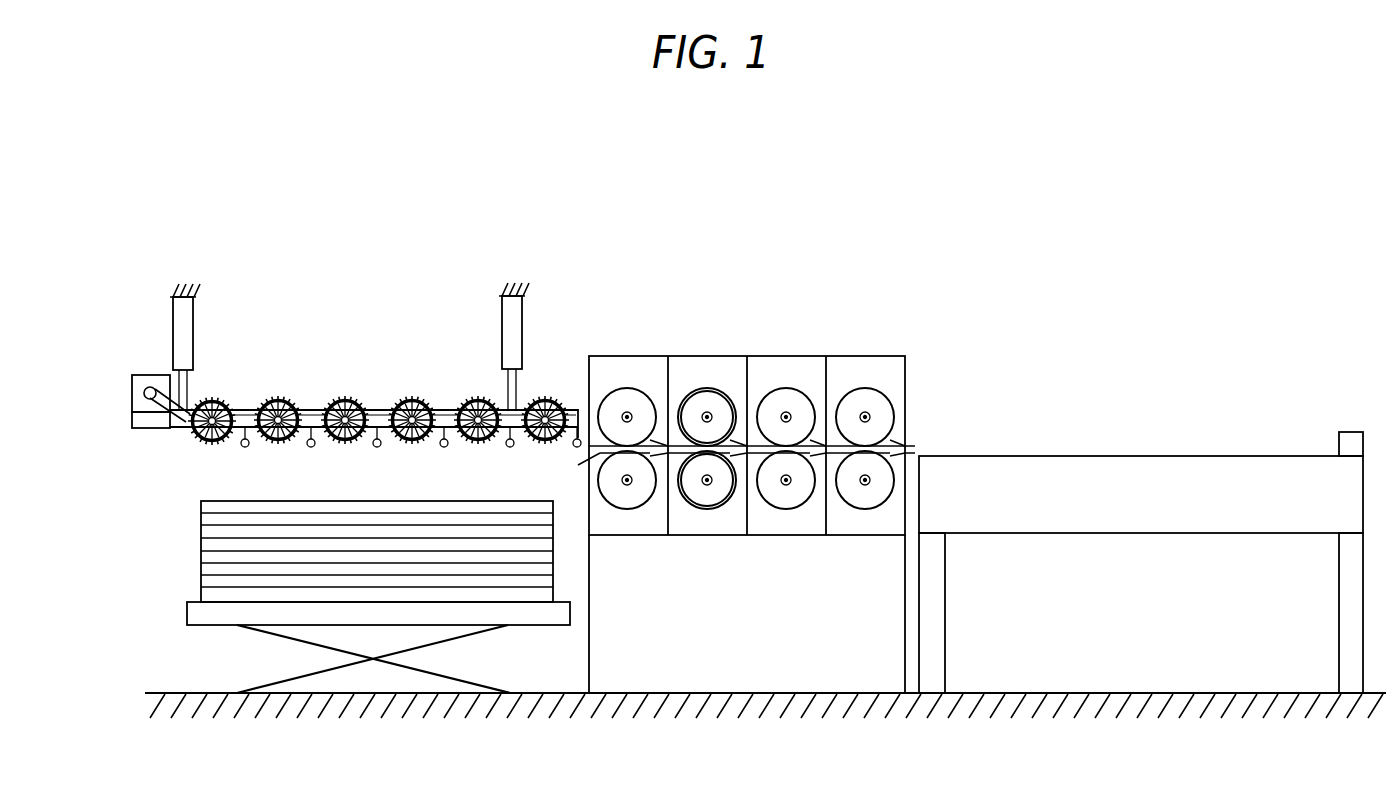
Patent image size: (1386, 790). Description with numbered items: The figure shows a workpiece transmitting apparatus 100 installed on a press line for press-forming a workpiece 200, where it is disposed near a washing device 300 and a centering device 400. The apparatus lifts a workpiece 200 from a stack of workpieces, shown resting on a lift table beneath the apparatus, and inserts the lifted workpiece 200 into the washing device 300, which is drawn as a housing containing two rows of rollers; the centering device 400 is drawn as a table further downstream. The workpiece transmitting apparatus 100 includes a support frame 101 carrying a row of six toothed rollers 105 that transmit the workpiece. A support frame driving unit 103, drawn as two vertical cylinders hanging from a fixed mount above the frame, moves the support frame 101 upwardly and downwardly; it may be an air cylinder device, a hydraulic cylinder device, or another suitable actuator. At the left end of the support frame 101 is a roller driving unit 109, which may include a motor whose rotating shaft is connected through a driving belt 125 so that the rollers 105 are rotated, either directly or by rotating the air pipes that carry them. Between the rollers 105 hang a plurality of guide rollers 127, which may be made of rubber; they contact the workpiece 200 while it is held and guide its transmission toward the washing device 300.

The workpiece transmitting apparatus 100 is at (327, 258).
The support frame 101 is at (133, 424).
The support frame driving unit 103 is at (197, 325).
The rollers 105 is at (278, 398).
The roller driving unit 109 is at (143, 375).
The driving belt 125 is at (165, 413).
The guide rollers 127 is at (246, 448).
The workpiece 200 is at (175, 562).
The washing device 300 is at (755, 335).
The centering device 400 is at (1106, 430).